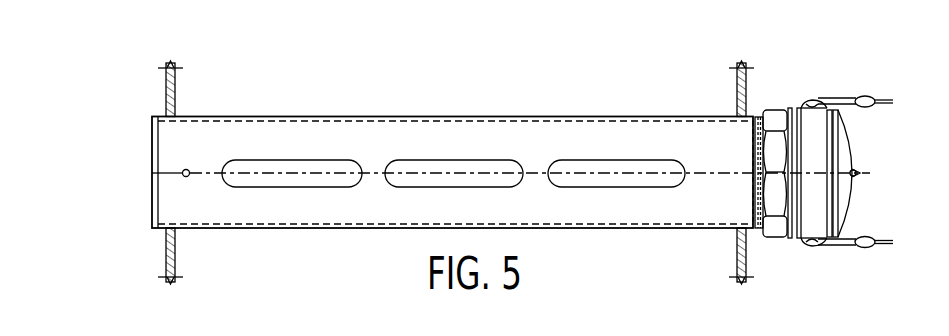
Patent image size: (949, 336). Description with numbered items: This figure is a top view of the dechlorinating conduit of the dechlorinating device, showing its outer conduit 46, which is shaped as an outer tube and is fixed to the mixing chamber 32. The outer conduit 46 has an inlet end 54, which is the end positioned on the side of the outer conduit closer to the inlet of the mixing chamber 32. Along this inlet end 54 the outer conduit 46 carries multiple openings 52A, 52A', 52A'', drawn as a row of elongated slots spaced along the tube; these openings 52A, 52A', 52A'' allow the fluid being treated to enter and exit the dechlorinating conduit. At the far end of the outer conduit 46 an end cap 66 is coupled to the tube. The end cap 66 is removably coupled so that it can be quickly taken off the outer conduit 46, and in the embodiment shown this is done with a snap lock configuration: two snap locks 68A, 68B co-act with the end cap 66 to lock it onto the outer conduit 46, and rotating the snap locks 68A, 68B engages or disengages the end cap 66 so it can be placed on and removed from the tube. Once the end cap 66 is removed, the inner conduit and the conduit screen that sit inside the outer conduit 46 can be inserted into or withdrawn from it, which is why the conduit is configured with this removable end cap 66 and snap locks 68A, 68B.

The mixing chamber 32 is at (748, 79).
The outer conduit 46 is at (183, 113).
The opening 52A is at (295, 123).
The opening 52A' is at (454, 123).
The opening 52A'' is at (616, 123).
The inlet end 54 is at (541, 173).
The end cap 66 is at (843, 153).
The snap lock 68A is at (866, 96).
The snap lock 68B is at (866, 248).